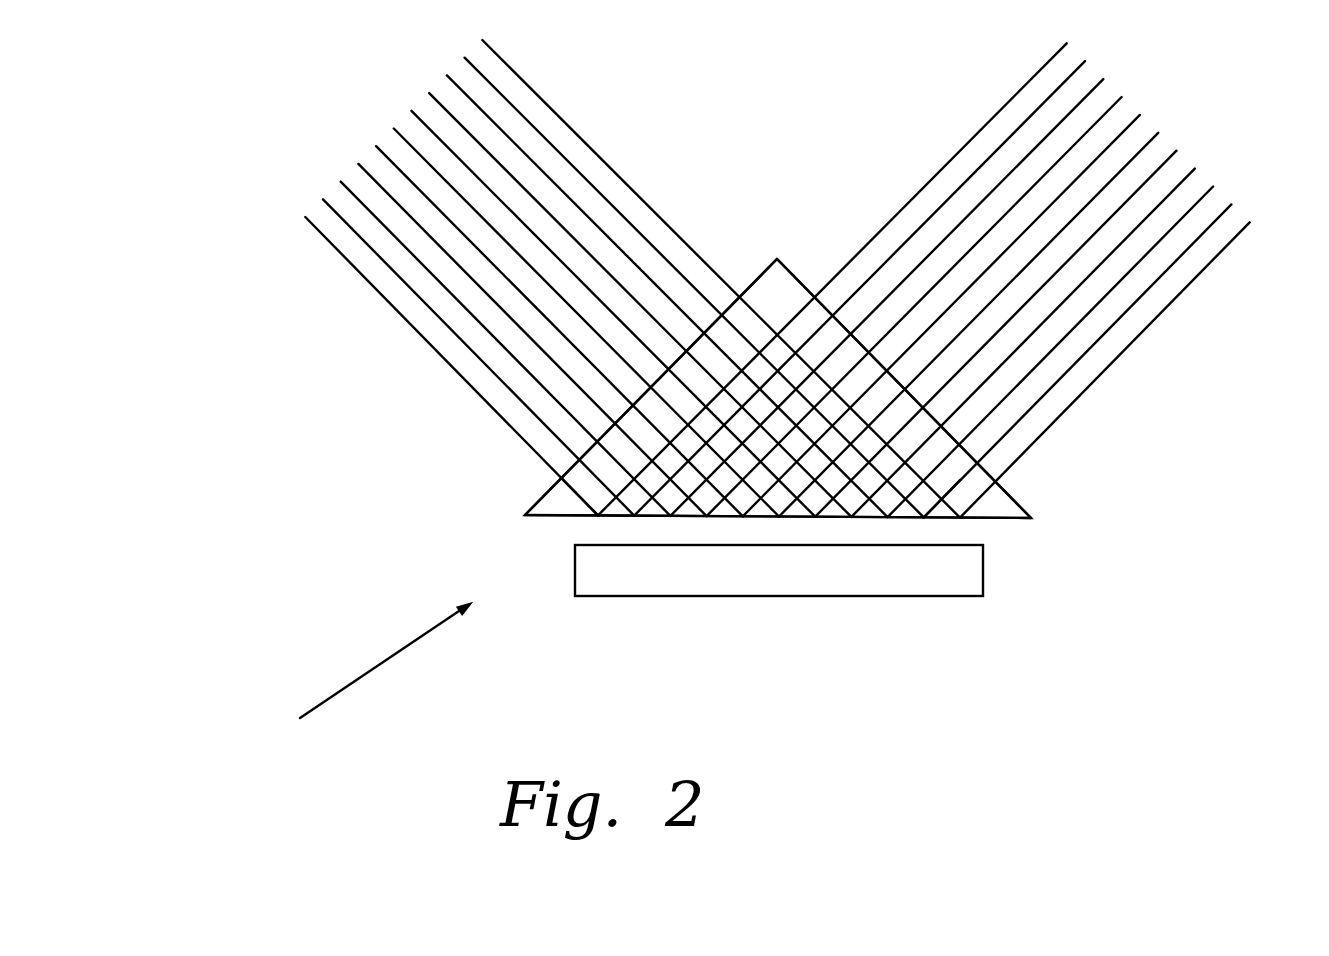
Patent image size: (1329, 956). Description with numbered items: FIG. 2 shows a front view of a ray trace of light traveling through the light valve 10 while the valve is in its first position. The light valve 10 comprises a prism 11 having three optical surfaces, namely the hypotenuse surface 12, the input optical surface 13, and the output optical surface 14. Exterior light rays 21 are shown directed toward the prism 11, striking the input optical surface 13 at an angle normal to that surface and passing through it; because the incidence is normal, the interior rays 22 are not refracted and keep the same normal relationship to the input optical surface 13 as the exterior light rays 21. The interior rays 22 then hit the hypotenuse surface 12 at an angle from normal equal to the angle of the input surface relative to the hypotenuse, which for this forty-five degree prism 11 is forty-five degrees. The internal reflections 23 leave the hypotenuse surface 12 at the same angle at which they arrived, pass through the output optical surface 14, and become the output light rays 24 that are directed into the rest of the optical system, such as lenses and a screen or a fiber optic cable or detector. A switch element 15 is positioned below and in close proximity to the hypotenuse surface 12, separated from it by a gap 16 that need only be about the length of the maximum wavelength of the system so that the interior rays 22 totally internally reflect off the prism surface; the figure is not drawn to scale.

The light valve 10 is at (351, 678).
The prism 11 is at (773, 283).
The hypotenuse surface 12 is at (1000, 523).
The input optical surface 13 is at (800, 278).
The output optical surface 14 is at (755, 278).
The switch element 15 is at (858, 565).
The gap 16 is at (582, 530).
The exterior light rays 21 is at (948, 280).
The interior rays 22 is at (1069, 480).
The internal reflections 23 is at (481, 478).
The output light rays 24 is at (620, 279).